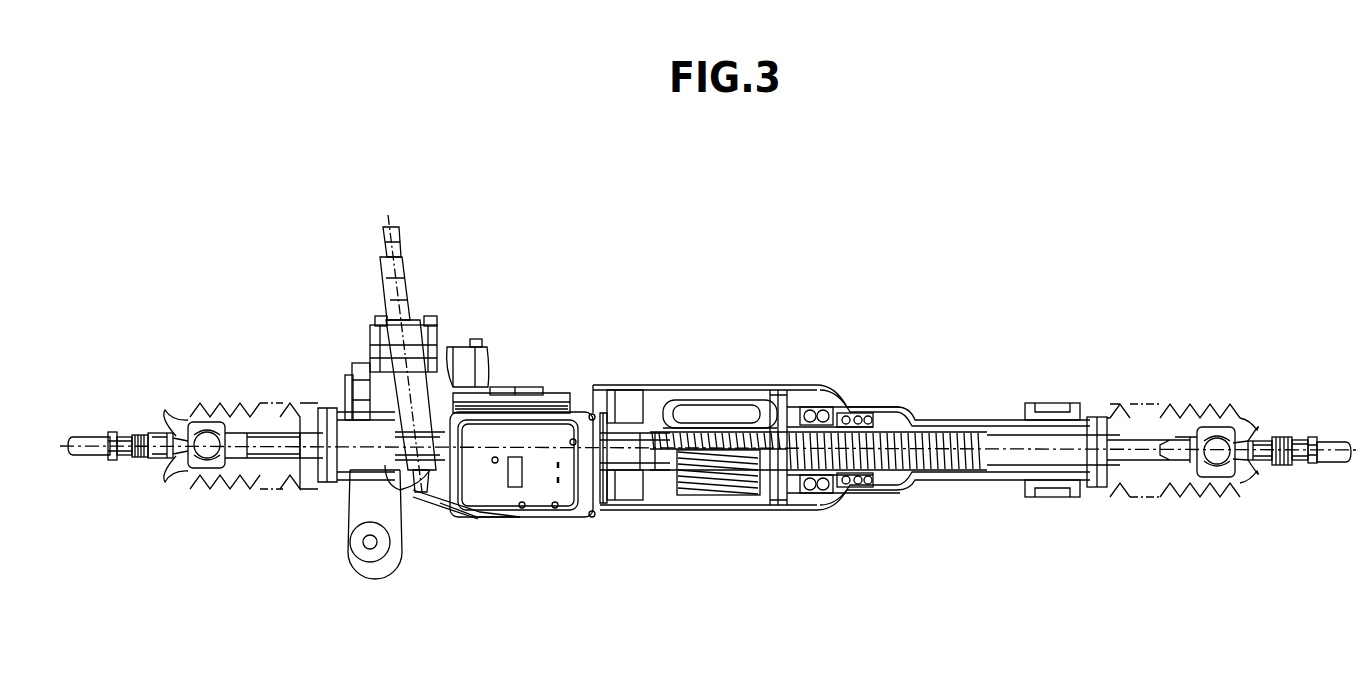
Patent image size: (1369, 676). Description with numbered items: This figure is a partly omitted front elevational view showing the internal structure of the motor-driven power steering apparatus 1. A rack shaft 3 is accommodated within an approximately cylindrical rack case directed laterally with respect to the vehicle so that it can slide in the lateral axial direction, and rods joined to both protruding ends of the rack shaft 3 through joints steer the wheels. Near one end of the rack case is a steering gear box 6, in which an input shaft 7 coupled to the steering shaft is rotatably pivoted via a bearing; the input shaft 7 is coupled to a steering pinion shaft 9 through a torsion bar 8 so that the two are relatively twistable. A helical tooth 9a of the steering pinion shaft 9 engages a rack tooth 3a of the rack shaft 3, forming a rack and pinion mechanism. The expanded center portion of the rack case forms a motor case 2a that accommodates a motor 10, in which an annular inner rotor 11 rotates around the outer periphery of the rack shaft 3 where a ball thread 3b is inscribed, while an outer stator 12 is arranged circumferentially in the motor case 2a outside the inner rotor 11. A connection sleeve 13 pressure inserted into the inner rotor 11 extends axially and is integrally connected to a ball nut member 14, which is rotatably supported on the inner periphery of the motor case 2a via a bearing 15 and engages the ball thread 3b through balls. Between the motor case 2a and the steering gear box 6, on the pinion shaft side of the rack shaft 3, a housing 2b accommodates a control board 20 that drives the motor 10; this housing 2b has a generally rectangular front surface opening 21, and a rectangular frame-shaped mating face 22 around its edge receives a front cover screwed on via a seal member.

The motor-driven power steering apparatus 1 is at (648, 313).
The motor case 2a is at (728, 510).
The housing 2b is at (547, 520).
The rack shaft 3 is at (1003, 458).
The rack tooth 3a is at (447, 468).
The ball thread 3b is at (877, 488).
The steering gear box 6 is at (448, 353).
The input shaft 7 is at (383, 283).
The torsion bar 8 is at (370, 341).
The steering pinion shaft 9 is at (416, 492).
The helical tooth 9a is at (398, 463).
The motor 10 is at (722, 389).
The inner rotor 11 is at (695, 327).
The outer stator 12 is at (717, 390).
The connection sleeve 13 is at (817, 390).
The ball nut member 14 is at (887, 388).
The bearing 15 is at (835, 387).
The control board 20 is at (505, 498).
The front surface opening 21 is at (587, 520).
The mating face 22 is at (601, 512).